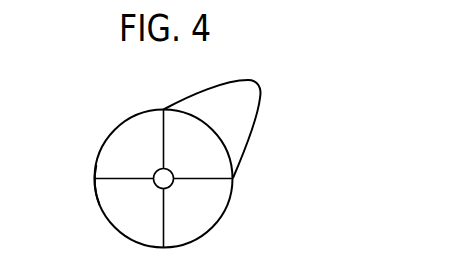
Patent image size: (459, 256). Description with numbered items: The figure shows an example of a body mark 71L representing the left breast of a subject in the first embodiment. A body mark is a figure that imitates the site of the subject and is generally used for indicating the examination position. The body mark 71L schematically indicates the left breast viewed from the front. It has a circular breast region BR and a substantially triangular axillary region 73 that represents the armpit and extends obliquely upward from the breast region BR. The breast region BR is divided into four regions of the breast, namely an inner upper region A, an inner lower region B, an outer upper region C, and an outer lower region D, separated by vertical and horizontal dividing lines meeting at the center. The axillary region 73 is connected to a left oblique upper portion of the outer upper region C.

The body mark 71L is at (114, 106).
The axillary region 73 is at (255, 125).
The breast region BR is at (98, 200).